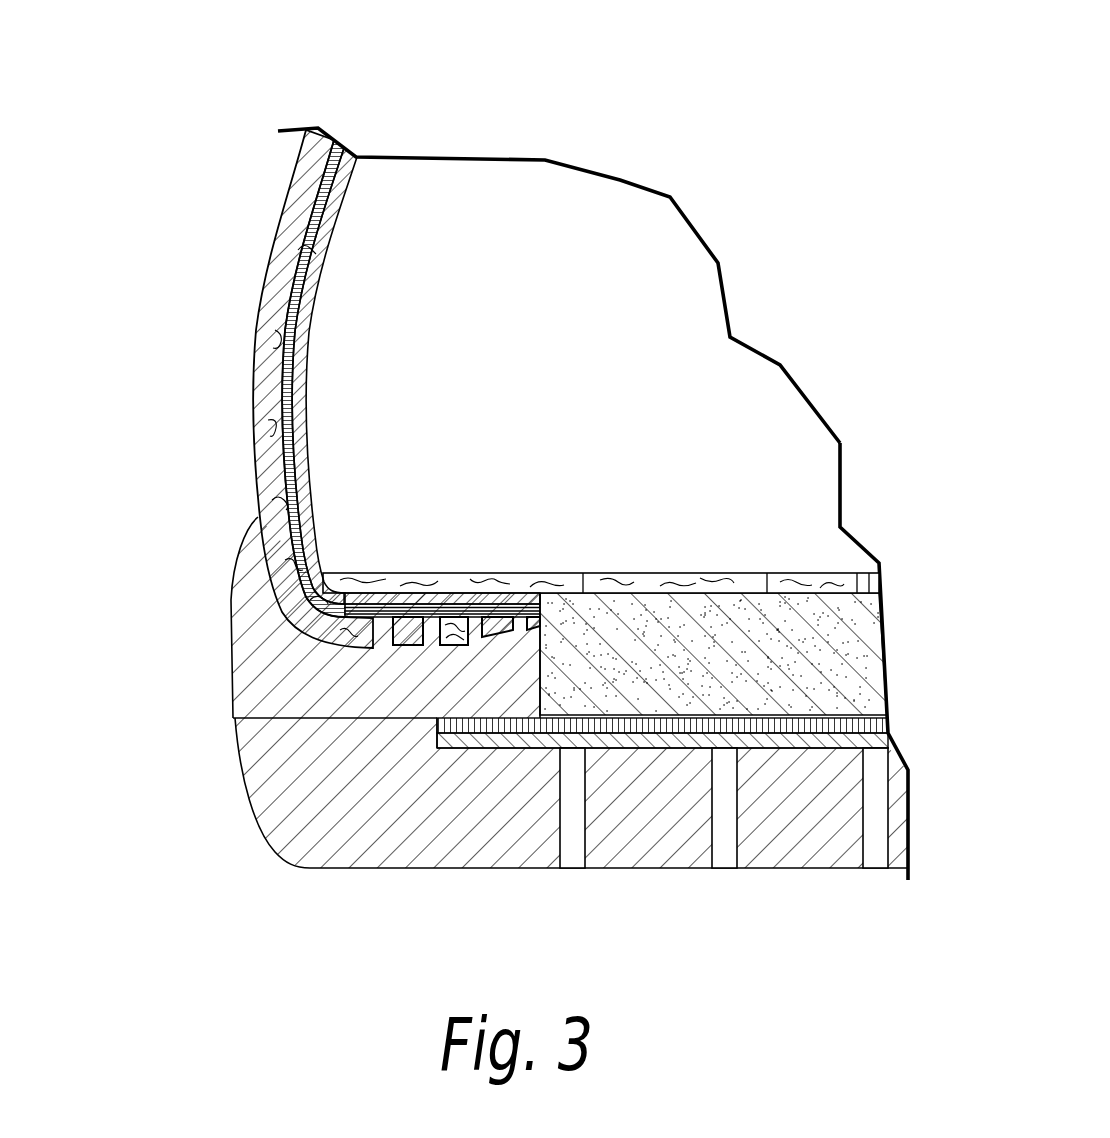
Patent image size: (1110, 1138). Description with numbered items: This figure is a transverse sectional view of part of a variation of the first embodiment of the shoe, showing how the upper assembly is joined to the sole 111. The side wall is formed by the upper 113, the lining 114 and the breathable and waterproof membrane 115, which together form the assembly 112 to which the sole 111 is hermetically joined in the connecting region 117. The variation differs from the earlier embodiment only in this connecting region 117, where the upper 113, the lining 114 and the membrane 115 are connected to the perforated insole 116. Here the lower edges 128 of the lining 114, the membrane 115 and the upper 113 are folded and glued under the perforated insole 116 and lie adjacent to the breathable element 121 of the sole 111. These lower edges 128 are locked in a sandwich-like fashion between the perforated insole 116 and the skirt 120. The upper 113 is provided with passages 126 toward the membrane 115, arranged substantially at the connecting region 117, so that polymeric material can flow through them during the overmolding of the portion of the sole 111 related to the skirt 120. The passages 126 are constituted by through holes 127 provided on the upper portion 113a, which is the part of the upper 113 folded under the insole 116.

The sole 111 is at (657, 878).
The assembly 112 is at (375, 324).
The upper 113 is at (290, 230).
The upper portion 113a is at (455, 625).
The lining 114 is at (338, 207).
The breathable and waterproof membrane 115 is at (334, 147).
The perforated insole 116 is at (633, 573).
The connecting region 117 is at (407, 627).
The skirt 120 is at (252, 629).
The breathable element 121 is at (830, 650).
The passages 126 is at (434, 660).
The through holes 127 is at (474, 640).
The lower edges 128 is at (556, 611).